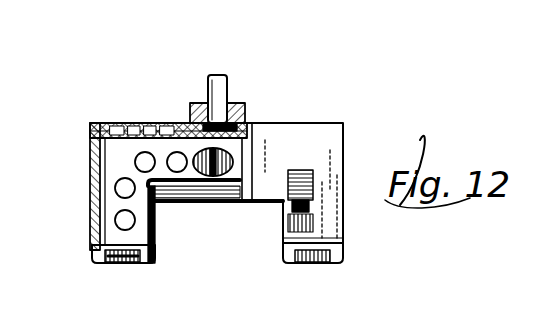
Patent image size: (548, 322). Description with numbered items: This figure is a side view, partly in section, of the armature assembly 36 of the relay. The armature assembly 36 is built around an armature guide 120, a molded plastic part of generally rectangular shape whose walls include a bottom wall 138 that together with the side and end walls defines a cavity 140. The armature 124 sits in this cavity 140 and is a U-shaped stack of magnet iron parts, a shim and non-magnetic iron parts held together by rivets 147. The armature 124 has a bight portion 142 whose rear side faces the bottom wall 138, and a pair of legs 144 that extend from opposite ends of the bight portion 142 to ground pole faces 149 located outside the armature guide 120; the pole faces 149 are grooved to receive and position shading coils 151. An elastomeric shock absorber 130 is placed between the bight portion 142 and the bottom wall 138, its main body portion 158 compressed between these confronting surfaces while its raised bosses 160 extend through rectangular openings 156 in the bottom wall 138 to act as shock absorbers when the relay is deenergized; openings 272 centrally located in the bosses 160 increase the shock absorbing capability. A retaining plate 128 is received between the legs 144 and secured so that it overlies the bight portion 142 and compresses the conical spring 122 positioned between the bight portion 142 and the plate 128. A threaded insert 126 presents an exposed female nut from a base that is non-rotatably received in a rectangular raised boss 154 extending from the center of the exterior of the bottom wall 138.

The armature assembly 36 is at (352, 219).
The armature guide 120 is at (343, 126).
The conical spring 122 is at (232, 203).
The armature 124 is at (137, 241).
The threaded insert 126 is at (217, 74).
The retaining plate 128 is at (168, 198).
The elastomeric shock absorber 130 is at (122, 130).
The bottom wall 138 is at (150, 127).
The cavity 140 is at (135, 126).
The bight portion 142 is at (236, 166).
The legs 144 is at (98, 238).
The rivets 147 is at (112, 220).
The pole faces 149 is at (110, 263).
The shading coils 151 is at (135, 264).
The raised boss 154 is at (245, 104).
The openings 156 is at (167, 128).
The main body portion 158 is at (135, 158).
The raised bosses 160 is at (143, 127).
The openings 272 is at (90, 143).